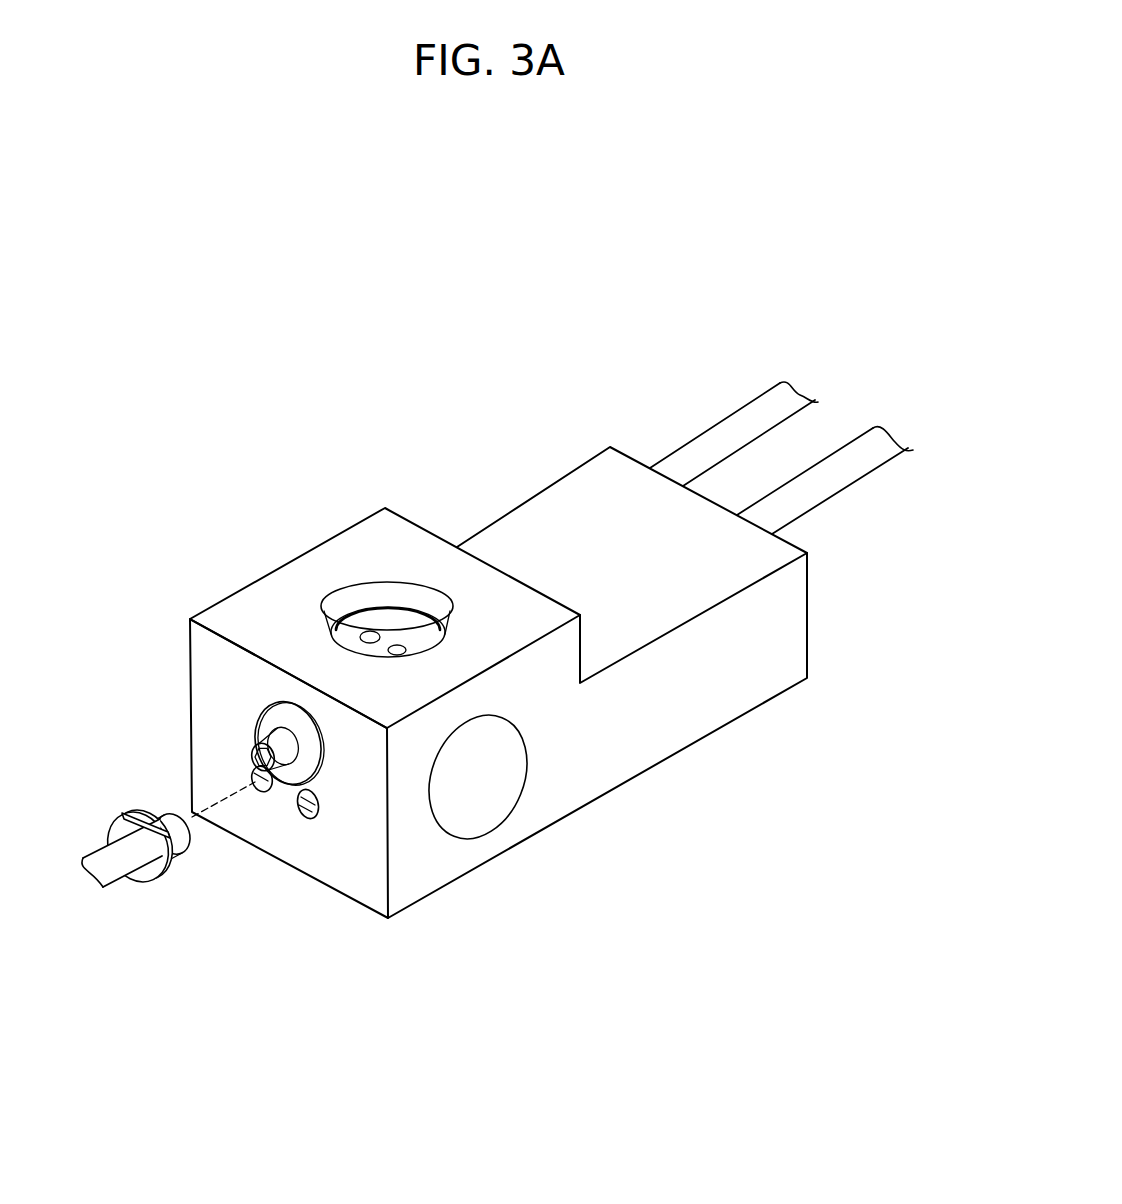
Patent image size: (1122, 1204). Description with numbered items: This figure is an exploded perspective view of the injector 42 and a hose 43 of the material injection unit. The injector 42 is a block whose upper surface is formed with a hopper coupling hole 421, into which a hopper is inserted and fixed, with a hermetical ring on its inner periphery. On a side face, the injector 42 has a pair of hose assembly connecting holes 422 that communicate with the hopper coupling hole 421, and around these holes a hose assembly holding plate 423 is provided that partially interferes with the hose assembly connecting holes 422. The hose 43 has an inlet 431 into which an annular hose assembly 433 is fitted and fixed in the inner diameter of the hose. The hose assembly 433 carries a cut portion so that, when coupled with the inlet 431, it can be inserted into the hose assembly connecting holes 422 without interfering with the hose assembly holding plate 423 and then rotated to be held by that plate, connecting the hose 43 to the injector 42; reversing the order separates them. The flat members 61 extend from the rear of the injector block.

The injector 42 is at (430, 668).
The hopper coupling hole 421 is at (393, 590).
The hose assembly connecting holes 422 is at (257, 787).
The hose assembly holding plate 423 is at (268, 724).
The hose 43 is at (132, 891).
The inlet 431 is at (102, 853).
The hose assembly 433 is at (143, 873).
The flat cables 61 is at (872, 453).